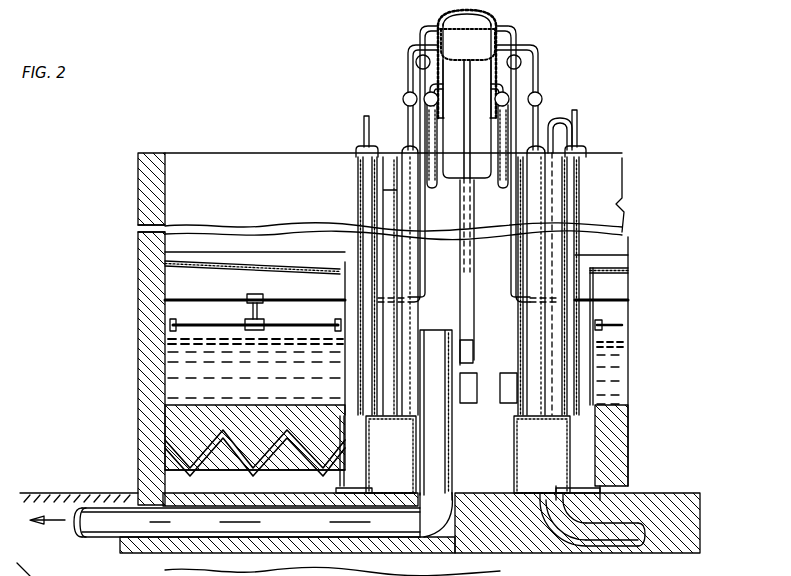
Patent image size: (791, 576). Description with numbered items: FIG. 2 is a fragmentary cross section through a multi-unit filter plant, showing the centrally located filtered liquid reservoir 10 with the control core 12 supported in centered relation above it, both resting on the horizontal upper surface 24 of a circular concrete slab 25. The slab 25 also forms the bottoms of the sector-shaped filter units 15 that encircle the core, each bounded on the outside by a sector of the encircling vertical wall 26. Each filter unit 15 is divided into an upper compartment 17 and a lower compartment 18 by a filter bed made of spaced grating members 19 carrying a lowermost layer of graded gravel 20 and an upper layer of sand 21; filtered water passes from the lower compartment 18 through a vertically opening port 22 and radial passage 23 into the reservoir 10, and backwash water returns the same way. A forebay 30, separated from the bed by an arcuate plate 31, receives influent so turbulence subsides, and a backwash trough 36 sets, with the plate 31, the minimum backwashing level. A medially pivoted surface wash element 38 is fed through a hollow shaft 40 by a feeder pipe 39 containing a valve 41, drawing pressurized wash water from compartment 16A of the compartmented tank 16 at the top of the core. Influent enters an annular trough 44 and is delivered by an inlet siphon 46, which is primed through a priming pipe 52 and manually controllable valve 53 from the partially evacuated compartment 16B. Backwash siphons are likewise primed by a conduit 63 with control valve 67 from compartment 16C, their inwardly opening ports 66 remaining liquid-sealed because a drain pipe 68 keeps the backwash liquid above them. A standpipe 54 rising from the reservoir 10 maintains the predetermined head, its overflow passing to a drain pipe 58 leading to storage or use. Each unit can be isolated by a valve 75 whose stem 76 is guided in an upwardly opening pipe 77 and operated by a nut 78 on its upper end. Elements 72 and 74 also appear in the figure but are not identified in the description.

The filtered liquid reservoir 10 is at (398, 437).
The control core 12 is at (384, 98).
The filter unit 15 is at (262, 218).
The compartmented tank 16 is at (464, 163).
The wash water compartment 16A is at (450, 27).
The partially evacuated compartment 16B is at (452, 47).
The partially evacuated compartment 16C is at (444, 79).
The upper compartment 17 is at (260, 395).
The lower compartment 18 is at (270, 488).
The grating members 19 is at (140, 460).
The graded gravel 20 is at (165, 442).
The sand 21 is at (165, 416).
The vertically opening port 22 is at (376, 465).
The radial passage 23 is at (345, 478).
The horizontal upper surface 24 is at (478, 493).
The circular concrete slab 25 is at (542, 553).
The encircling vertical wall 26 is at (165, 264).
The forebay 30 is at (350, 268).
The arcuate wall or plate 31 is at (352, 370).
The backwash trough 36 is at (262, 252).
The surface wash element 38 is at (180, 326).
The feeder pipe 39 is at (518, 30).
The hollow shaft 40 is at (268, 312).
The valve 41 is at (415, 62).
The annular trough or manifold 44 is at (383, 172).
The inlet siphon 46 is at (404, 148).
The priming pipe 52 is at (407, 131).
The manually controllable valve 53 is at (405, 104).
The standpipe 54 is at (540, 318).
The drain pipe 58 is at (592, 519).
The conduit 63 is at (434, 190).
The inwardly opening port 66 is at (476, 375).
The control valve 67 is at (437, 99).
The drain pipe 68 is at (435, 412).
The rod 72 is at (460, 311).
The control rod 74 is at (472, 107).
The valve 75 is at (348, 486).
The stem 76 is at (364, 132).
The guide pipe 77 is at (358, 208).
The nut 78 is at (358, 150).